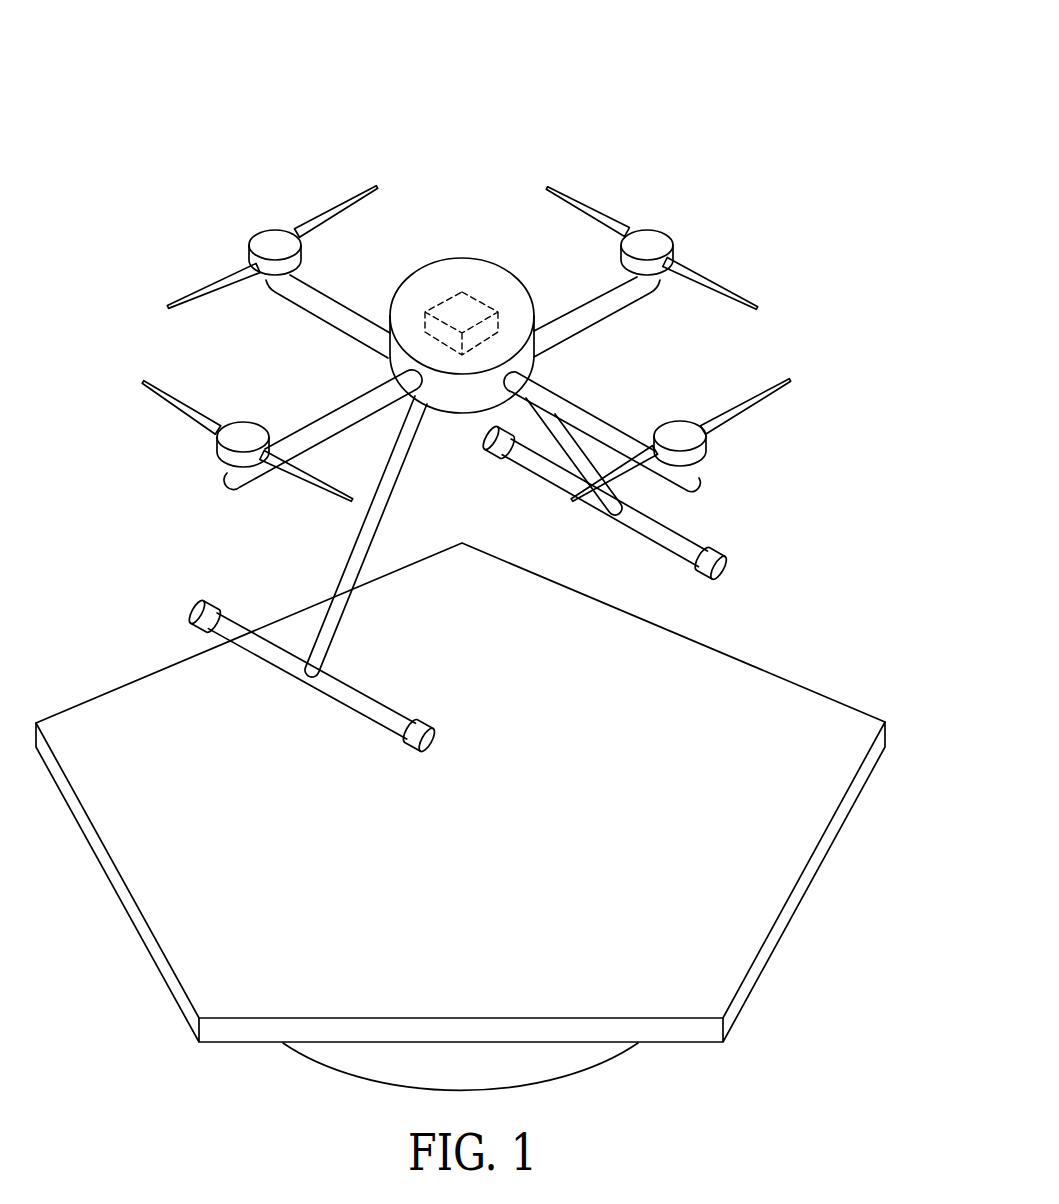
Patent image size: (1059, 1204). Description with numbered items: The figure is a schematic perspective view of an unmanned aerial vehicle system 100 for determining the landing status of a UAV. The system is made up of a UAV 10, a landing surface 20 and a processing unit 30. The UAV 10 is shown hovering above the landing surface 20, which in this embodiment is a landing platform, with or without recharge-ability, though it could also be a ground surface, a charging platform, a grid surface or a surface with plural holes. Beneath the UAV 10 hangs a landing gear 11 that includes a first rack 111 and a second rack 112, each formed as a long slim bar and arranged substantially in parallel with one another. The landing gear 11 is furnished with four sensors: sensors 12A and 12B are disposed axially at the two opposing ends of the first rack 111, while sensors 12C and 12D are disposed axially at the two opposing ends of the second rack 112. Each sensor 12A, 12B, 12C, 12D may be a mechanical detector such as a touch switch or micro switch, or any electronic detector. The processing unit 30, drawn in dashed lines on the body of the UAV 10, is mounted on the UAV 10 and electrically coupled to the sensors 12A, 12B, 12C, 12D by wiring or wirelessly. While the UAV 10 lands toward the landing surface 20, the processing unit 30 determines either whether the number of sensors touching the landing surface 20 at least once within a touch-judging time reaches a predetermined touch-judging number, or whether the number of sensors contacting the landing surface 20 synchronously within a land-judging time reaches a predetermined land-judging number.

The unmanned aerial vehicle system 100 is at (692, 72).
The UAV 10 is at (477, 170).
The landing surface 20 is at (148, 707).
The processing unit 30 is at (473, 307).
The landing gear 11 is at (640, 583).
The first rack 111 is at (370, 712).
The second rack 112 is at (663, 543).
The sensor 12A is at (412, 748).
The sensor 12B is at (188, 608).
The sensor 12C is at (723, 553).
The sensor 12D is at (493, 448).